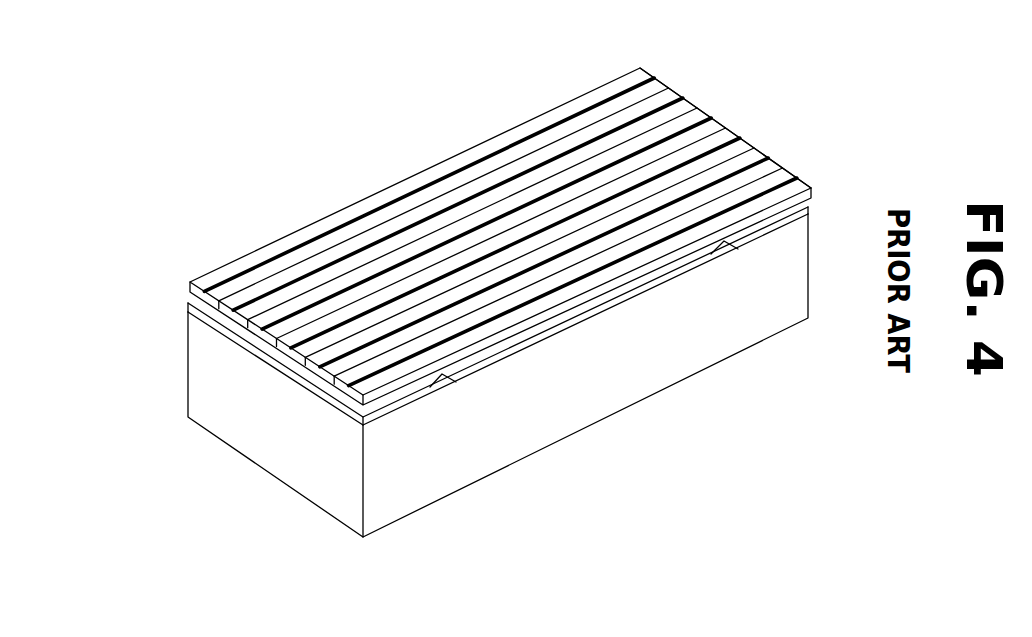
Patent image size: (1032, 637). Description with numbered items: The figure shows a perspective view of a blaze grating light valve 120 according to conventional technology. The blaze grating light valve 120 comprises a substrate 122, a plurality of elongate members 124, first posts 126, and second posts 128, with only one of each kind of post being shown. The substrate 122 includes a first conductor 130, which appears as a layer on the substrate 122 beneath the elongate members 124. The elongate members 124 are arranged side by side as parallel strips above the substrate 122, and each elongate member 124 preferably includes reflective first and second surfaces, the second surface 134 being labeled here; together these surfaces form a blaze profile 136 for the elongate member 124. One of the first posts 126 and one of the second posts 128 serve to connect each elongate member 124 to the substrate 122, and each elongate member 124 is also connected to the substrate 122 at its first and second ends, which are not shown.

The blaze grating light valve 120 is at (219, 144).
The substrate 122 is at (187, 403).
The elongate member 124 is at (300, 270).
The first post 126 is at (452, 384).
The second post 128 is at (732, 254).
The first conductor 130 is at (582, 324).
The second surface 134 is at (455, 166).
The blaze profile 136 is at (648, 64).